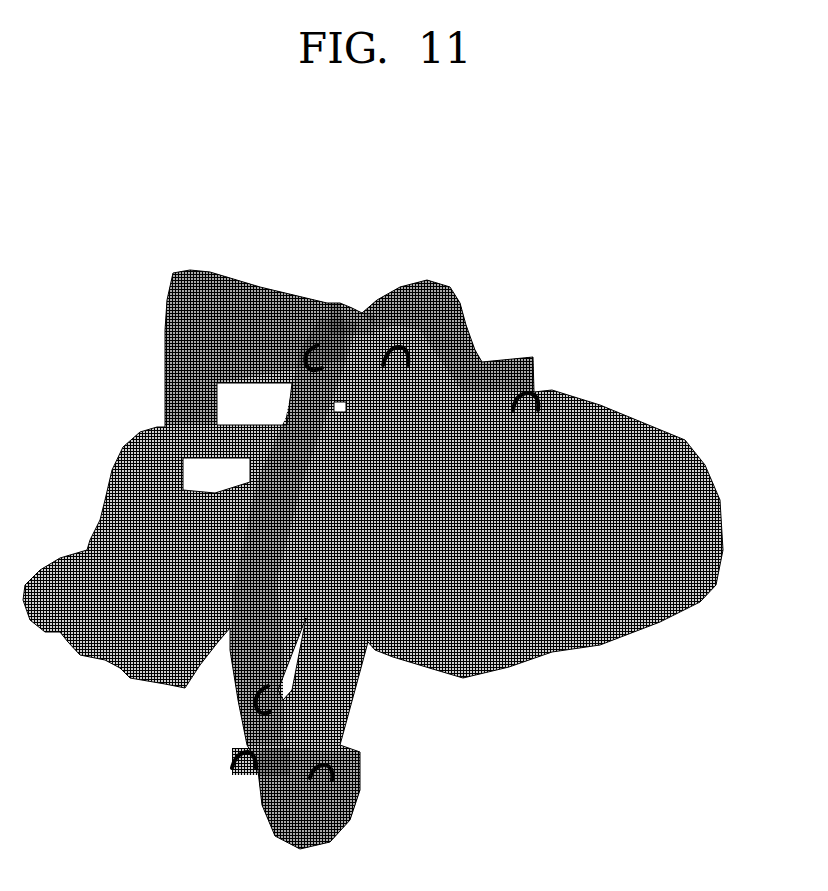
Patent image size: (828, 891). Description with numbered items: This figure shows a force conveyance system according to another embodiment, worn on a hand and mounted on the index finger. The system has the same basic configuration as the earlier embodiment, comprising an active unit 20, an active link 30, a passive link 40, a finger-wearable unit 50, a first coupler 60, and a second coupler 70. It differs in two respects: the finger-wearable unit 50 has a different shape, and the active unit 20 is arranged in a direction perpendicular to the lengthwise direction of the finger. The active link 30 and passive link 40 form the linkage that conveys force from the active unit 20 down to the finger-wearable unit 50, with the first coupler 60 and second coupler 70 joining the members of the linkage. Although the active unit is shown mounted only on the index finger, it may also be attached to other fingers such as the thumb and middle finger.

The active unit 20 is at (255, 303).
The active link 30 is at (440, 281).
The passive link 40 is at (236, 634).
The finger-wearable unit 50 is at (345, 810).
The first coupler 60 is at (357, 302).
The second coupler 70 is at (225, 760).